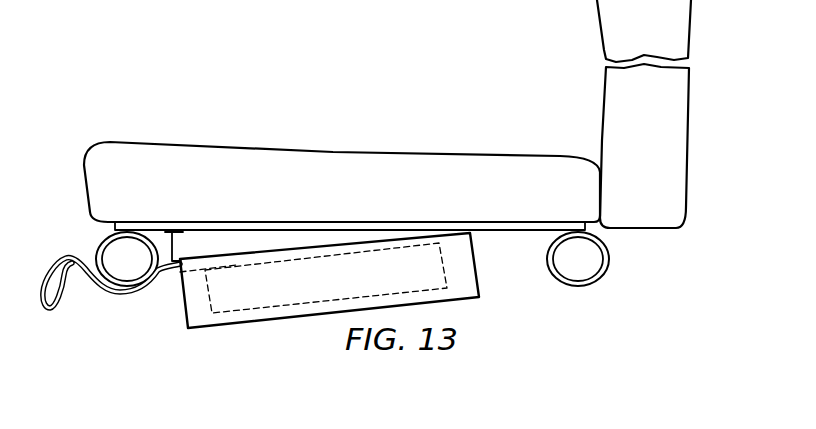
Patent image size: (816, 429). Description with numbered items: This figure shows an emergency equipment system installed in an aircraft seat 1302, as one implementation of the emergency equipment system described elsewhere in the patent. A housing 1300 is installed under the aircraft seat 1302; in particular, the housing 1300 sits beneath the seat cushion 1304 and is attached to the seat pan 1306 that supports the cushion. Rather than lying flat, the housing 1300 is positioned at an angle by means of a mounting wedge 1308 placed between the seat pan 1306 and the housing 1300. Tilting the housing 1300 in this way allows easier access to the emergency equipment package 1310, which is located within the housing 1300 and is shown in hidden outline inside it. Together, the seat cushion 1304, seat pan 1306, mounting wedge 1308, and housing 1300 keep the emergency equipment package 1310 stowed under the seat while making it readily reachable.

The housing 1300 is at (185, 306).
The aircraft seat 1302 is at (689, 115).
The seat cushion 1304 is at (333, 153).
The seat pan 1306 is at (502, 231).
The mounting wedge 1308 is at (172, 245).
The emergency equipment package 1310 is at (208, 304).